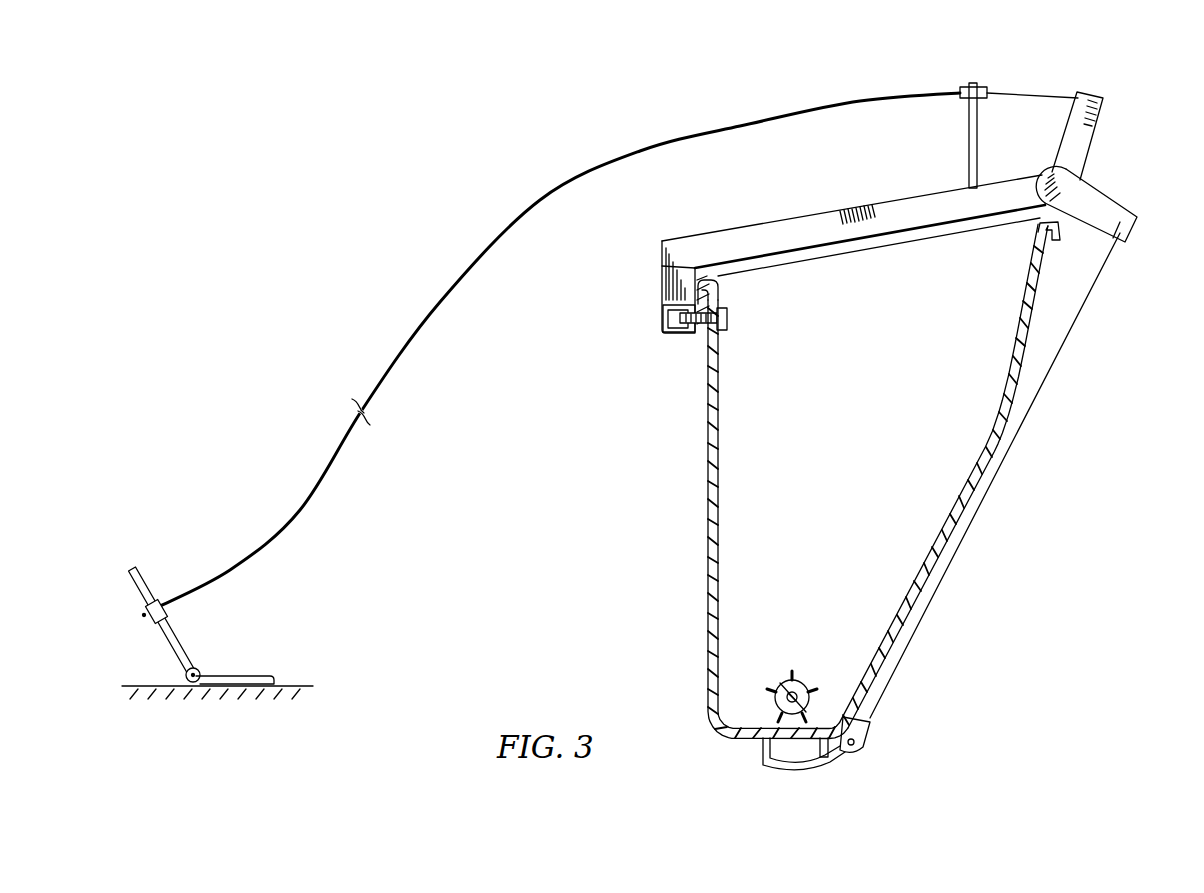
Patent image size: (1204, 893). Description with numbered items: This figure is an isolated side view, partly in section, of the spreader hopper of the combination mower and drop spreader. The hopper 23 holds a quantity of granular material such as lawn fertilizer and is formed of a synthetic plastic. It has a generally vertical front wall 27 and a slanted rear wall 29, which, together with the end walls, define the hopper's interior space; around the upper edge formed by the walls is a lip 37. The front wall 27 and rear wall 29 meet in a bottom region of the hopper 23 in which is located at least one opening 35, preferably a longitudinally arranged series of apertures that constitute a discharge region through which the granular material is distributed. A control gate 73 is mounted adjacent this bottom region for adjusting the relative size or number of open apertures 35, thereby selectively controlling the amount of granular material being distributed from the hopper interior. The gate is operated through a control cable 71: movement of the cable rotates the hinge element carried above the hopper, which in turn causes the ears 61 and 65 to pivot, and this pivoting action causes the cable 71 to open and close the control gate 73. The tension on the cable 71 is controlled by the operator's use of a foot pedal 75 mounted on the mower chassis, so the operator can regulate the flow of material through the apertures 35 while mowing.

The hopper 23 is at (1022, 595).
The front wall 27 is at (706, 488).
The rear wall 29 is at (1023, 363).
The opening 35 is at (775, 735).
The lip 37 is at (1060, 242).
The ear 61 is at (1117, 202).
The ear 65 is at (1093, 94).
The control cable 71 is at (822, 105).
The control gate 73 is at (795, 768).
The foot pedal 75 is at (142, 580).